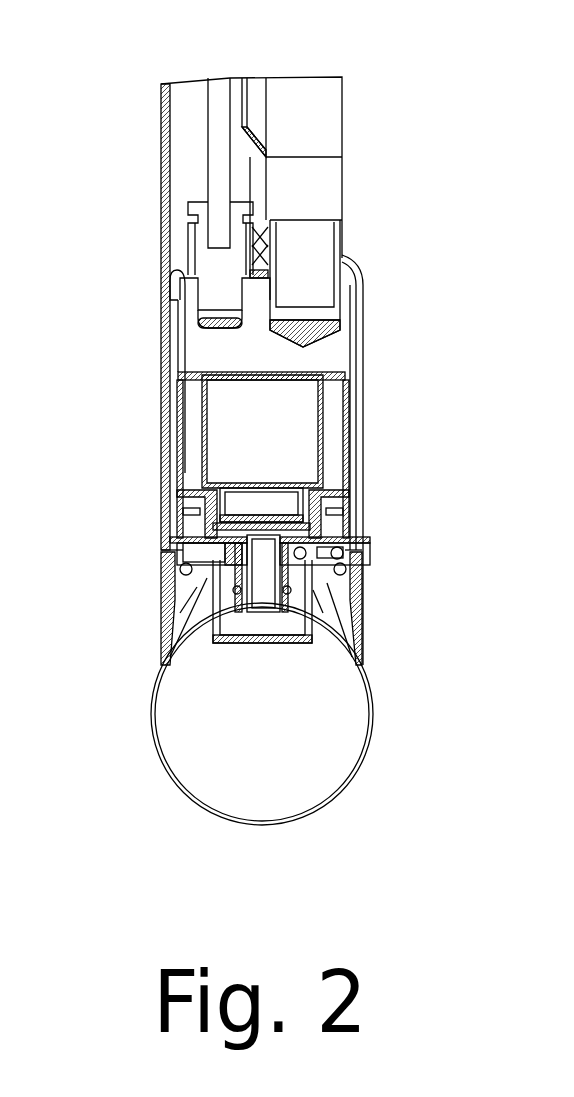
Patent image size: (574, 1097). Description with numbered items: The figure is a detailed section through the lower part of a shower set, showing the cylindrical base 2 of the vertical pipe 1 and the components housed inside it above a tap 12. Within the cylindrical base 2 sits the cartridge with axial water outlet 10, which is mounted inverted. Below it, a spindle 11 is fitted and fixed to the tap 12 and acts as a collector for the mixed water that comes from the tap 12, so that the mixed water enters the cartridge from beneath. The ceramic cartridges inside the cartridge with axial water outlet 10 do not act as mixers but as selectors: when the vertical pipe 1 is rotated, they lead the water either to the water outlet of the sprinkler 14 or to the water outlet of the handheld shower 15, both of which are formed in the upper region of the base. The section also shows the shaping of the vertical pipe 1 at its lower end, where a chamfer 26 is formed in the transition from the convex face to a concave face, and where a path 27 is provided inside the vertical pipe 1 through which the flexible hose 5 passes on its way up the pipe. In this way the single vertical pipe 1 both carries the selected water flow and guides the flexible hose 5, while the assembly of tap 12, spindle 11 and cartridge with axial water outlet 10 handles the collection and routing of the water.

The vertical pipe 1 is at (160, 118).
The cylindrical base 2 is at (147, 423).
The flexible hose 5 is at (317, 88).
The cartridge with axial water outlet 10 is at (223, 457).
The spindle 11 is at (257, 578).
The tap 12 is at (318, 748).
The water outlet of the sprinkler 14 is at (215, 275).
The water outlet of the handheld shower 15 is at (330, 317).
The chamfer 26 is at (365, 258).
The path 27 is at (342, 247).